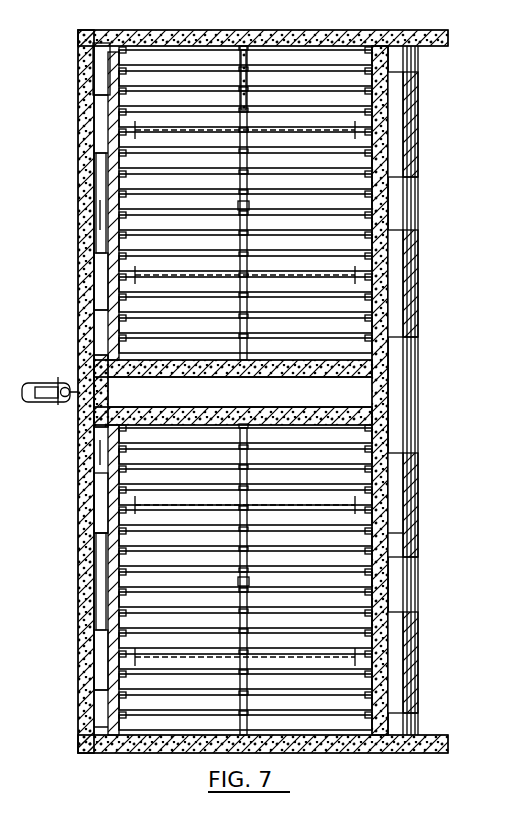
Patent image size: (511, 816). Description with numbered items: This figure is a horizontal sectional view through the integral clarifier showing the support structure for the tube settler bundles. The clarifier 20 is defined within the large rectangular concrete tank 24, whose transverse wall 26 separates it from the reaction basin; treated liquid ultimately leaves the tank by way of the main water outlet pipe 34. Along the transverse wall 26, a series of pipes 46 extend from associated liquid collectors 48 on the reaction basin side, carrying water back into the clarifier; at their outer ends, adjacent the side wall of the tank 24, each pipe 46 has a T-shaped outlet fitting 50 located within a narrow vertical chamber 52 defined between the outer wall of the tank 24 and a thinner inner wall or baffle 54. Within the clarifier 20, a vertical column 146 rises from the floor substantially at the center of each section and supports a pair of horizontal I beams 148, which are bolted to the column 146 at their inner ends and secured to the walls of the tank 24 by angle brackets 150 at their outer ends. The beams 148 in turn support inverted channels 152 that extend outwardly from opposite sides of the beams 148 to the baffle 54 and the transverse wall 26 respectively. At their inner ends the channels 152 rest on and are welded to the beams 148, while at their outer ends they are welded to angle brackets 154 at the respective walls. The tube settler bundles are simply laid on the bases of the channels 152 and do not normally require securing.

The clarifier 20 is at (346, 226).
The tank 24 is at (70, 337).
The transverse wall 26 is at (412, 396).
The main water outlet pipe 34 is at (66, 405).
The pipes 46 is at (400, 118).
The liquid collectors 48 is at (424, 138).
The T-shaped outlet fitting 50 is at (93, 103).
The vertical chamber 52 is at (100, 216).
The inner wall or baffle 54 is at (105, 186).
The vertical column 146 is at (249, 206).
The horizontal I beams 148 is at (250, 249).
The angle brackets 150 is at (250, 80).
The inverted channels 152 is at (310, 465).
The angle brackets 154 is at (400, 538).